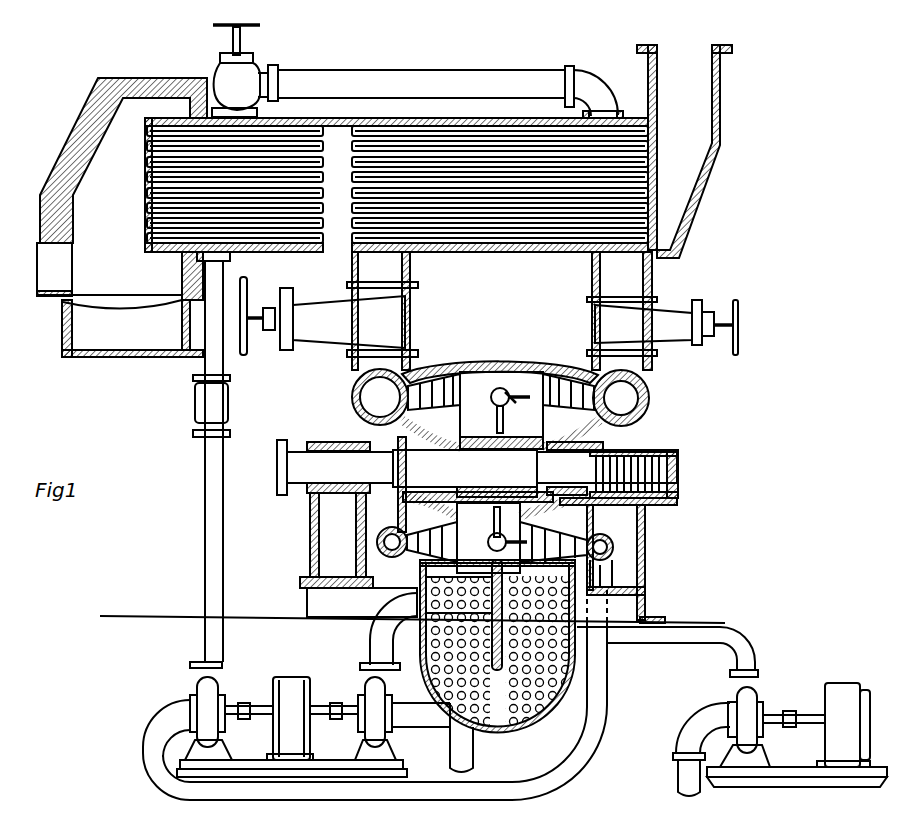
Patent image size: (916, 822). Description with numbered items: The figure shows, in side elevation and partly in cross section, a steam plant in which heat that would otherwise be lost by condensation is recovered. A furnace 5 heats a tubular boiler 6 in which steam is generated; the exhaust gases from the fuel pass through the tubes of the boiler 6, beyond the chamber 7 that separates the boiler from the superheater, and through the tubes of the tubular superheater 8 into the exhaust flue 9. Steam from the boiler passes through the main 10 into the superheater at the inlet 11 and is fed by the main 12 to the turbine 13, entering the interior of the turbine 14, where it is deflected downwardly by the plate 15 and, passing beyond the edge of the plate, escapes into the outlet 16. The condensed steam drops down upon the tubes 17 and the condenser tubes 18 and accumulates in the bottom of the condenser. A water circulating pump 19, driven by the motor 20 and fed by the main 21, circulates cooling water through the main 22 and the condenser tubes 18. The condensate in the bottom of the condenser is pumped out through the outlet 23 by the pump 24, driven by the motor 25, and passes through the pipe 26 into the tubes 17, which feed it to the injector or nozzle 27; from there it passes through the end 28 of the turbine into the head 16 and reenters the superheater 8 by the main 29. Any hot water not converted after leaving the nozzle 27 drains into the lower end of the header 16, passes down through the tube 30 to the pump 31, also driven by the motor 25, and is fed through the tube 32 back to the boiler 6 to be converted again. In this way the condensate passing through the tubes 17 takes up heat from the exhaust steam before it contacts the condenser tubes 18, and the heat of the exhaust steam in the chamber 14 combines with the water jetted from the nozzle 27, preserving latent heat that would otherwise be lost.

The furnace 5 is at (42, 217).
The tubular boiler 6 is at (145, 132).
The chamber 7 is at (243, 184).
The tubular superheater 8 is at (655, 136).
The exhaust flue 9 is at (684, 151).
The main 10 is at (325, 69).
The superheater inlet 11 is at (615, 112).
The main 12 is at (402, 530).
The turbine 13 is at (430, 376).
The interior of the turbine 14 is at (480, 380).
The plate 15 is at (496, 418).
The outlet 16 is at (632, 390).
The tubes 17 is at (453, 584).
The condenser tubes 18 is at (426, 672).
The water circulating pump 19 is at (757, 744).
The motor 20 is at (850, 687).
The main 21 is at (678, 775).
The main 22 is at (680, 634).
The outlet 23 is at (430, 718).
The pump 24 is at (367, 728).
The motor 25 is at (288, 688).
The pipe 26 is at (452, 606).
The injector or nozzle 27 is at (515, 393).
The end of the turbine 28 is at (616, 486).
The main 29 is at (635, 283).
The tube 30 is at (605, 573).
The pump 31 is at (215, 683).
The tube 32 is at (223, 506).